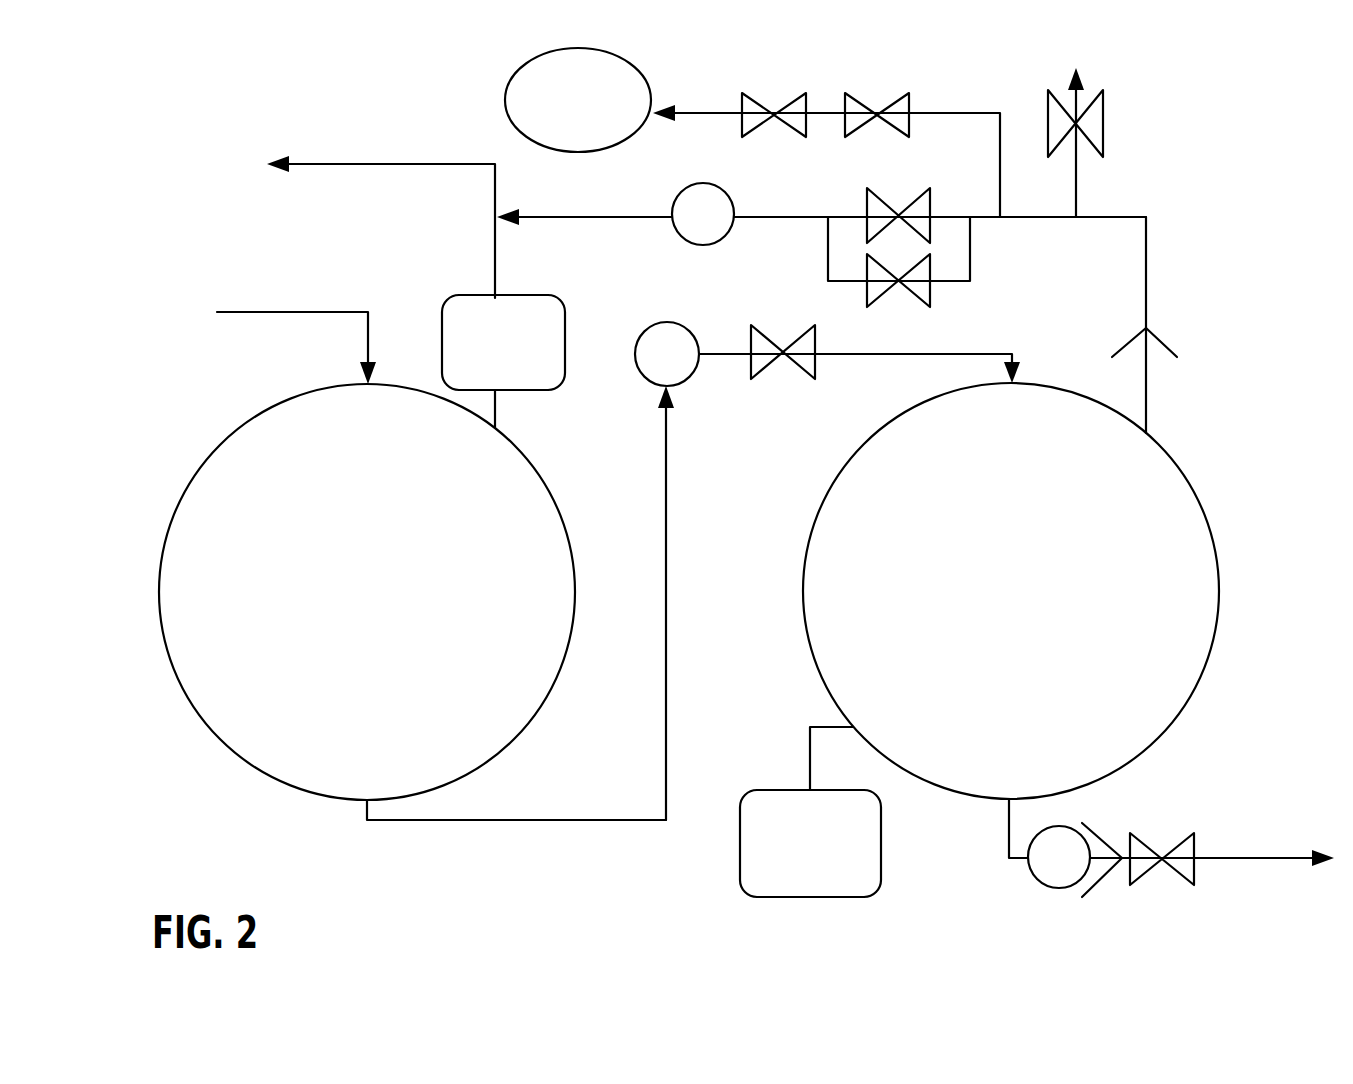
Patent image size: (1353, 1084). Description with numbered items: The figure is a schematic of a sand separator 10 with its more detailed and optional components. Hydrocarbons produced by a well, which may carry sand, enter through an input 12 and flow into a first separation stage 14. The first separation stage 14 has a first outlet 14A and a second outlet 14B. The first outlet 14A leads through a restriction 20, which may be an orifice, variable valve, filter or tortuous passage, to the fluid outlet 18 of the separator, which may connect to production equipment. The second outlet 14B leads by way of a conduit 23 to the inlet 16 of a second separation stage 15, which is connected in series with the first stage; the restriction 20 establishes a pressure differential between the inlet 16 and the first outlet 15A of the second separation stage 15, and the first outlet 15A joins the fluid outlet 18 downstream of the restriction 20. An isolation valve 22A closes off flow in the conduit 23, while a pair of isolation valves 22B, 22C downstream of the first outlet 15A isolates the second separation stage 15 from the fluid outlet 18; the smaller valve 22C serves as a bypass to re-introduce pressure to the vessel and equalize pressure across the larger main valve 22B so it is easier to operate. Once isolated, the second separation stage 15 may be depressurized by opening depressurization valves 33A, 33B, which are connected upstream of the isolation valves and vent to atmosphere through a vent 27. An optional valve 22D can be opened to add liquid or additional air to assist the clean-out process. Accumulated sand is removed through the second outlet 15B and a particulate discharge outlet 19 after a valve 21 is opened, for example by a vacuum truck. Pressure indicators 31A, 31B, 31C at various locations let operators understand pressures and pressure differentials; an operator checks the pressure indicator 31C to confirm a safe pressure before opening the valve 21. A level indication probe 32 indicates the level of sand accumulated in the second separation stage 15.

The sand separator 10 is at (150, 96).
The input 12 is at (262, 312).
The first separation stage 14 is at (218, 443).
The first outlet 14A is at (495, 427).
The second outlet 14B is at (367, 800).
The second separation stage 15 is at (1188, 483).
The first outlet 15A is at (1147, 430).
The second outlet 15B is at (1005, 800).
The inlet 16 is at (1014, 380).
The fluid outlet 18 is at (358, 163).
The particulate discharge outlet 19 is at (1286, 853).
The restriction 20 is at (452, 297).
The valve 21 is at (1168, 834).
The isolation valve 22A is at (784, 379).
The isolation valve 22B is at (910, 190).
The isolation valve 22C is at (903, 306).
The optional valve 22D is at (1055, 125).
The conduit 23 is at (666, 683).
The vent 27 is at (505, 103).
The pressure indicator 31A is at (660, 324).
The pressure indicator 31B is at (700, 245).
The pressure indicator 31C is at (1058, 888).
The level indication probe 32 is at (740, 843).
The depressurization valve 33A is at (847, 128).
The depressurization valve 33B is at (748, 131).